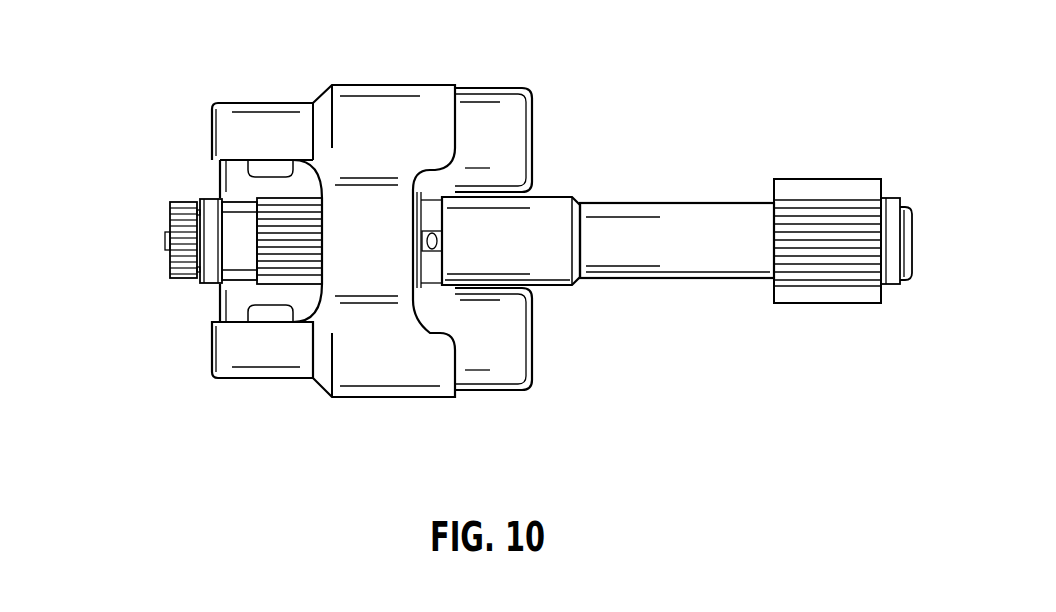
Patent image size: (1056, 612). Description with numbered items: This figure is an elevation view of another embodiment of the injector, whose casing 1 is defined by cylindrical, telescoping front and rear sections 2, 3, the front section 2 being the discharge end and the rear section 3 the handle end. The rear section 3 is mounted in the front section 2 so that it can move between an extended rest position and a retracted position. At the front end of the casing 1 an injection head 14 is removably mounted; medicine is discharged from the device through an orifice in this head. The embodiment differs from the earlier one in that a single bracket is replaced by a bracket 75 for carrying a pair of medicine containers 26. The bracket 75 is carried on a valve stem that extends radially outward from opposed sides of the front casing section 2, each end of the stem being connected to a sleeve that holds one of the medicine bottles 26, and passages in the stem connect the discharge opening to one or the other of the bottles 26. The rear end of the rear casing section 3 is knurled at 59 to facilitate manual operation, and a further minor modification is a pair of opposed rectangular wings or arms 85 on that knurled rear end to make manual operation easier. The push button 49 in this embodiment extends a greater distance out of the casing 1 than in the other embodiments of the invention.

The casing 1 is at (640, 166).
The front section 2 is at (553, 284).
The rear section 3 is at (676, 212).
The injection head 14 is at (178, 279).
The medicine containers 26 is at (528, 150).
The push button 49 is at (912, 220).
The knurling 59 is at (858, 250).
The bracket 75 is at (383, 256).
The wings or arms 85 is at (906, 244).